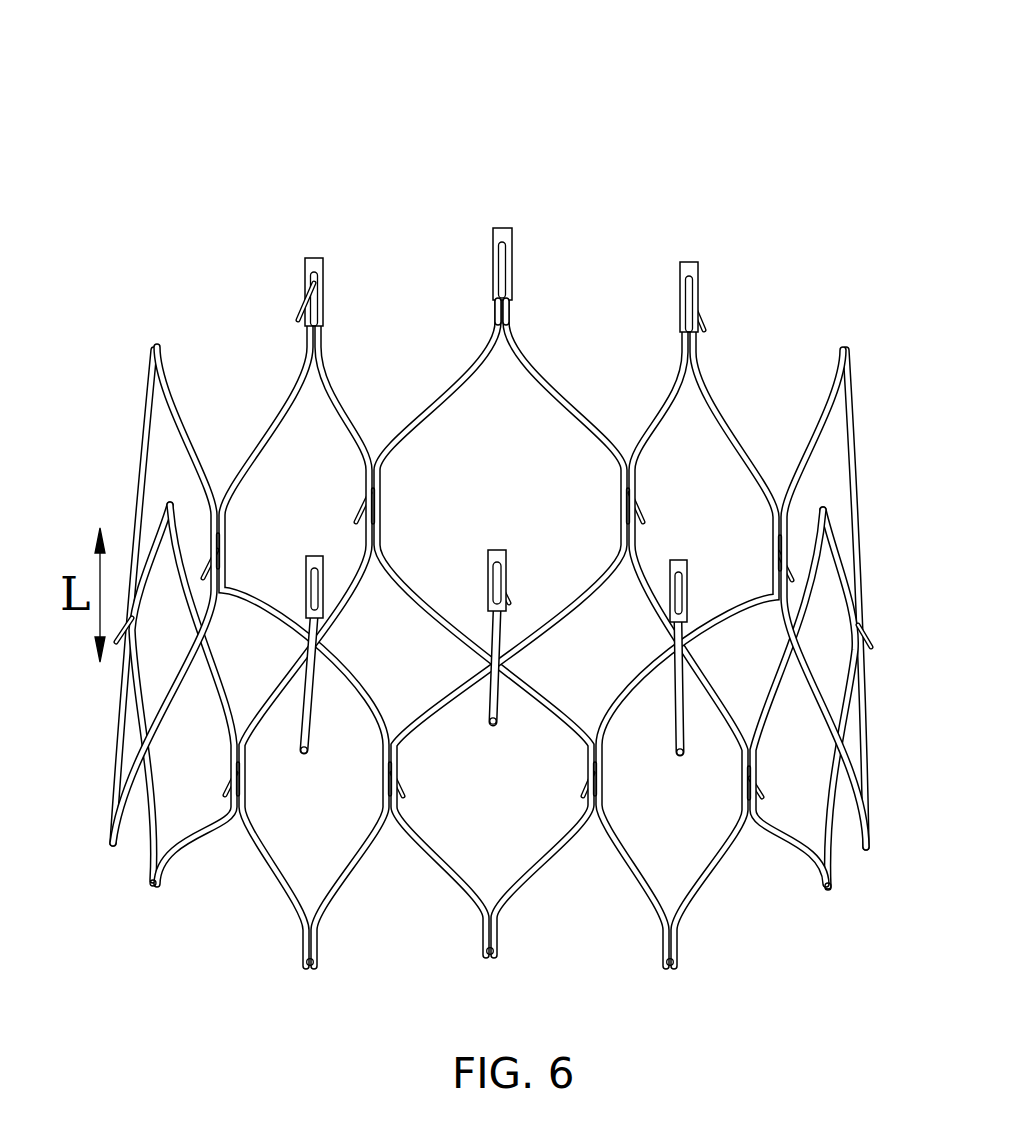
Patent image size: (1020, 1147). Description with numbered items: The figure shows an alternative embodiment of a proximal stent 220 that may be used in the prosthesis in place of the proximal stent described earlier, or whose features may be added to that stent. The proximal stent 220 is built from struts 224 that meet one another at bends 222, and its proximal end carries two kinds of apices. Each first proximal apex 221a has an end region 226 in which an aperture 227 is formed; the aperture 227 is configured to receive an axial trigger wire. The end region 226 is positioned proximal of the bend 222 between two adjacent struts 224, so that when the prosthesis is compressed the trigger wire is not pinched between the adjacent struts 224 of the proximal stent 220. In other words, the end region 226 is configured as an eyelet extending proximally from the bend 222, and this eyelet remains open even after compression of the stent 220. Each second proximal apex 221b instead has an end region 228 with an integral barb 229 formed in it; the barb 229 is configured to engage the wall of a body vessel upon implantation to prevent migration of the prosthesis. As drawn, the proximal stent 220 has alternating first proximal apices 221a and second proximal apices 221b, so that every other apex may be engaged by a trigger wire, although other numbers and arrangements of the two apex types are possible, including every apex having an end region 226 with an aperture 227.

The proximal stent 220 is at (356, 108).
The first proximal apex 221a is at (491, 212).
The second proximal apex 221b is at (301, 244).
The bend 222 is at (511, 300).
The struts 224 is at (538, 400).
The end region 226 is at (492, 237).
The aperture 227 is at (509, 253).
The end region 228 is at (306, 337).
The integral barb 229 is at (295, 318).